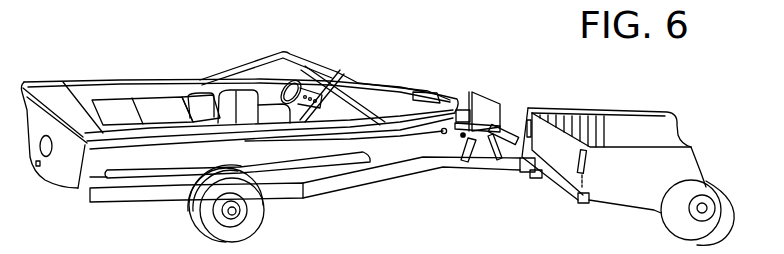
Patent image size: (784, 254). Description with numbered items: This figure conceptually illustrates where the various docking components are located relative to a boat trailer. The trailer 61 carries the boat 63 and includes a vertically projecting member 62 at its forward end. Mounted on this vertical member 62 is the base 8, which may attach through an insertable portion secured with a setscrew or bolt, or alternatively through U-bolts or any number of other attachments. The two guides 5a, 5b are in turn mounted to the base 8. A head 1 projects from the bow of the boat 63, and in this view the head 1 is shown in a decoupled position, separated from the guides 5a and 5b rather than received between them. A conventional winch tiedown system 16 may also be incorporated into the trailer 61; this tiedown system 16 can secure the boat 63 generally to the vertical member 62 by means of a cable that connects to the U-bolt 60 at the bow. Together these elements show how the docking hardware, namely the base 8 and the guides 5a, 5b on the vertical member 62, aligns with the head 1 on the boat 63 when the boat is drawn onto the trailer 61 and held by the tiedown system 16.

The boat 63 is at (105, 63).
The head 1 is at (463, 108).
The guide 5a is at (492, 118).
The guide 5b is at (480, 97).
The winch tiedown system 16 is at (463, 138).
The U-bolt 60 is at (442, 134).
The trailer 61 is at (392, 178).
The vertically projecting member 62 is at (477, 160).
The base 8 is at (501, 150).